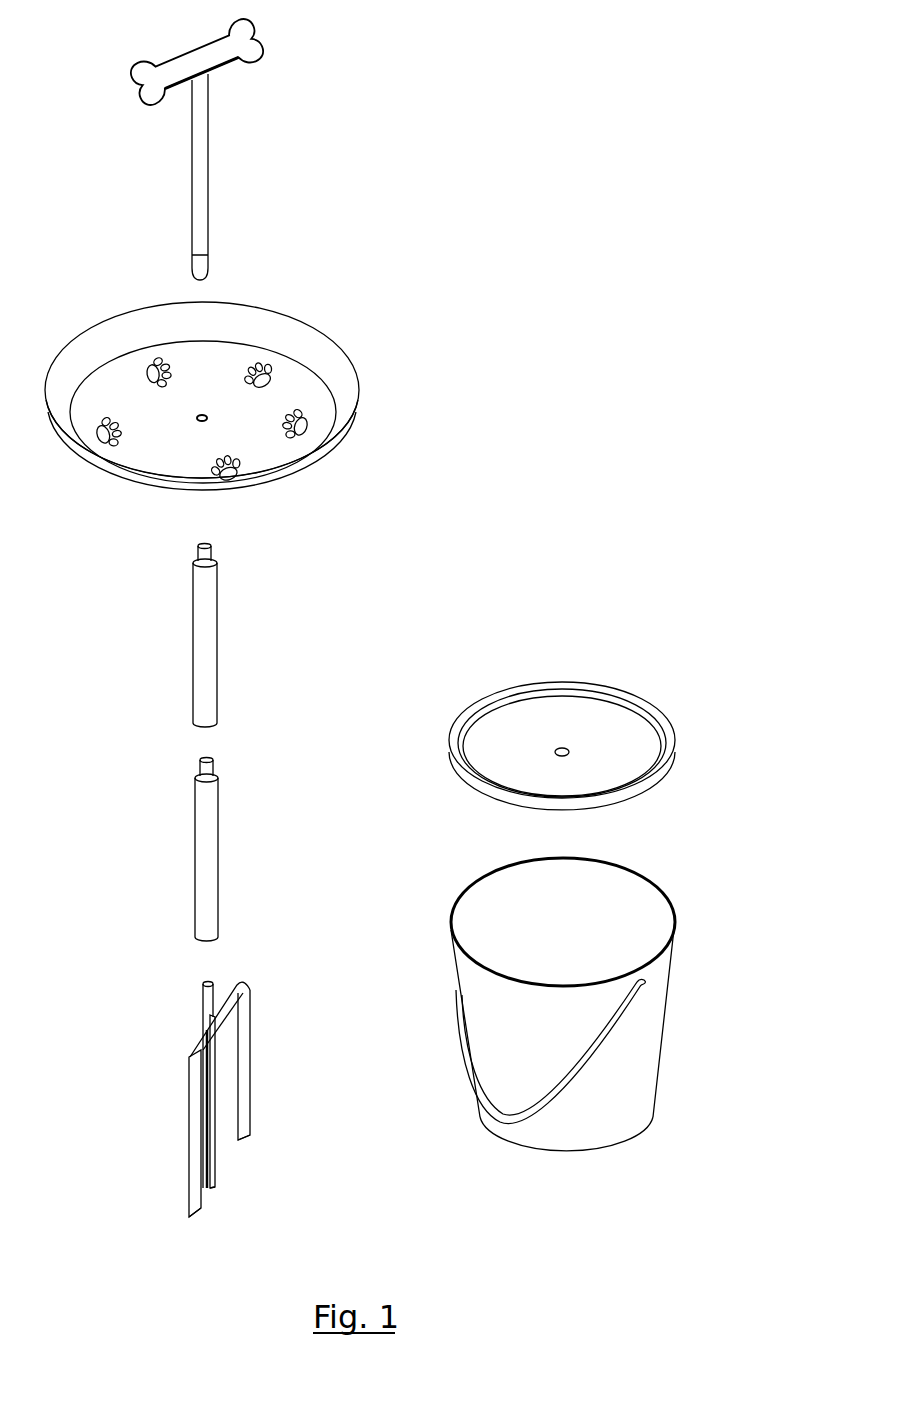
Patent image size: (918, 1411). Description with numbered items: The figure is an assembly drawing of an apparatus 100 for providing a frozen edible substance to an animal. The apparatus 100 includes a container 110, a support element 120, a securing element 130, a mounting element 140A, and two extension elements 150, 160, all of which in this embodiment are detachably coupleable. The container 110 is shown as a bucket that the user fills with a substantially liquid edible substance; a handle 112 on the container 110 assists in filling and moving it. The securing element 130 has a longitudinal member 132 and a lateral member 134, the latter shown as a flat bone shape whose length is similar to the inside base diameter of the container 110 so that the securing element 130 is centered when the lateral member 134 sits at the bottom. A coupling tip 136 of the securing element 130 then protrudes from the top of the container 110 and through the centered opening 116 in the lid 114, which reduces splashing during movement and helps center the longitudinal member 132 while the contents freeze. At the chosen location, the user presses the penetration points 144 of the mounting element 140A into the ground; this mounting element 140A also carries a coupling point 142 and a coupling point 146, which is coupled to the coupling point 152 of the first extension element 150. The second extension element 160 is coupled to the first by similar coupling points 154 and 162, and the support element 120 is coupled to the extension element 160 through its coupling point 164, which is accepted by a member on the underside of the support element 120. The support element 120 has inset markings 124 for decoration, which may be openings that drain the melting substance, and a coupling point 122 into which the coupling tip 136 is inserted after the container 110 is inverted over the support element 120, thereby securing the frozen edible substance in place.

The apparatus 100 is at (652, 1265).
The container 110 is at (432, 1143).
The handle 112 is at (456, 1045).
The lid 114 is at (458, 783).
The opening 116 is at (561, 747).
The support element 120 is at (412, 416).
The coupling point 122 is at (202, 413).
The inset markings 124 is at (295, 444).
The securing element 130 is at (318, 171).
The longitudinal member 132 is at (192, 163).
The lateral member 134 is at (266, 44).
The coupling tip 136 is at (209, 256).
The mounting element 140A is at (137, 1133).
The coupling point 142 is at (238, 1140).
The penetration points 144 is at (198, 1050).
The coupling point 146 is at (212, 983).
The extension element 150 is at (258, 864).
The coupling point 152 is at (200, 938).
The coupling point 154 is at (202, 764).
The extension element 160 is at (258, 643).
The coupling point 162 is at (212, 723).
The coupling point 164 is at (207, 548).